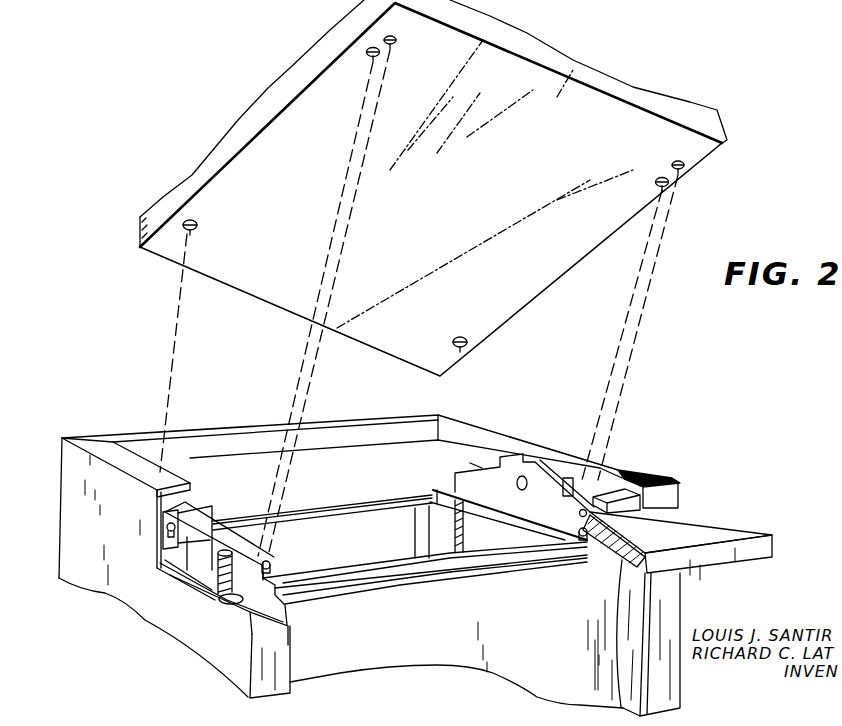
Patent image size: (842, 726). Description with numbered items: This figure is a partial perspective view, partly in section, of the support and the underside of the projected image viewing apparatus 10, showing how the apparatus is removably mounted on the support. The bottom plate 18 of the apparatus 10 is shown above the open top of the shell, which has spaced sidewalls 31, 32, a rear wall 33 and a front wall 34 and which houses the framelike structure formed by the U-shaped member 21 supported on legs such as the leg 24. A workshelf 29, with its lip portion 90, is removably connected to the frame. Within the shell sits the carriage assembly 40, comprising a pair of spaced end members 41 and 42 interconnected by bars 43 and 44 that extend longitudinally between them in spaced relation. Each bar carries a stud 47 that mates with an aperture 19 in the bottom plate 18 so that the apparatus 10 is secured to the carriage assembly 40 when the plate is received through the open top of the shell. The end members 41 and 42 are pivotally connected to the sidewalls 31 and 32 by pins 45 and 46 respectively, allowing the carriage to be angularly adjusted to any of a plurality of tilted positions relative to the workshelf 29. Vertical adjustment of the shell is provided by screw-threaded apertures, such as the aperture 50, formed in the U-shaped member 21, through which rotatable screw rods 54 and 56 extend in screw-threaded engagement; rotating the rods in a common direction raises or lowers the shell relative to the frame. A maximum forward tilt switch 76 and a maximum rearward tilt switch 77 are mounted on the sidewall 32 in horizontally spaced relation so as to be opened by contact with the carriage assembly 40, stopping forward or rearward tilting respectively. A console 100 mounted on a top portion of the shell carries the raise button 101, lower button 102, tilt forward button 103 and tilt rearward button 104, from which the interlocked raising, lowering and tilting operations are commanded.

The projected image viewing apparatus 10 is at (232, 106).
The bottom plate 18 is at (466, 192).
The aperture 19 is at (392, 44).
The U-shaped member 21 is at (188, 567).
The leg 24 is at (413, 527).
The workshelf 29 is at (713, 526).
The sidewall 31 is at (96, 559).
The sidewall 32 is at (487, 551).
The rear wall 33 is at (257, 479).
The front wall 34 is at (447, 614).
The carriage assembly 40 is at (376, 497).
The carriage end member 41 is at (203, 514).
The carriage end member 42 is at (502, 494).
The bar 43 is at (358, 585).
The bar 44 is at (325, 519).
The pin 45 is at (162, 534).
The pin 46 is at (522, 475).
The stud 47 is at (271, 563).
The screw-threaded aperture 50 is at (224, 613).
The screw rod 54 is at (202, 593).
The screw rod 56 is at (417, 549).
The maximum forward tilt switch 76 is at (476, 462).
The maximum rearward tilt switch 77 is at (570, 476).
The lip portion 90 is at (632, 512).
The console 100 is at (686, 483).
The raise button 101 is at (638, 470).
The lower button 102 is at (655, 472).
The tilt forward button 103 is at (667, 474).
The tilt rearward button 104 is at (630, 504).